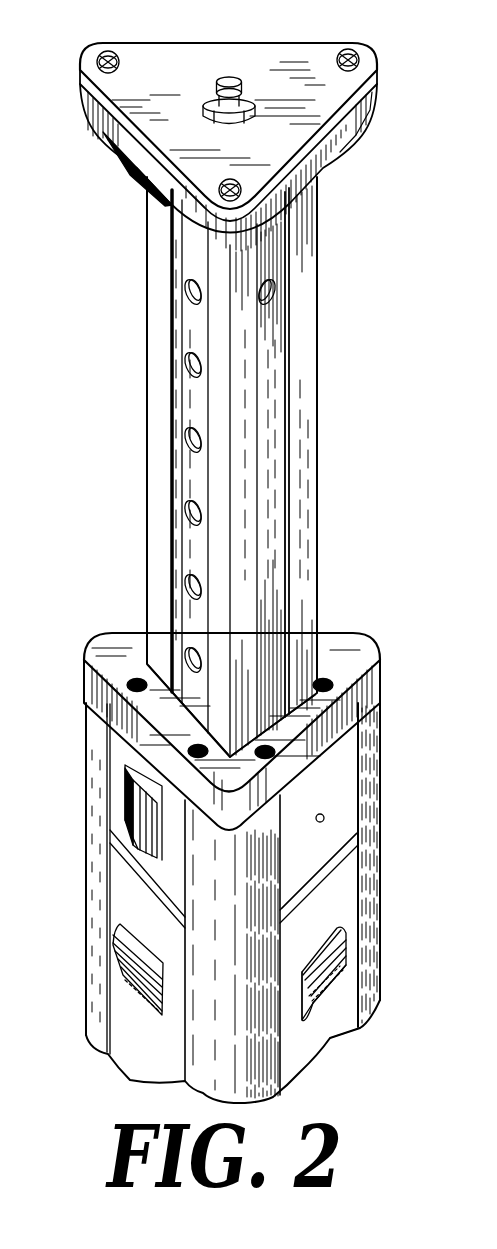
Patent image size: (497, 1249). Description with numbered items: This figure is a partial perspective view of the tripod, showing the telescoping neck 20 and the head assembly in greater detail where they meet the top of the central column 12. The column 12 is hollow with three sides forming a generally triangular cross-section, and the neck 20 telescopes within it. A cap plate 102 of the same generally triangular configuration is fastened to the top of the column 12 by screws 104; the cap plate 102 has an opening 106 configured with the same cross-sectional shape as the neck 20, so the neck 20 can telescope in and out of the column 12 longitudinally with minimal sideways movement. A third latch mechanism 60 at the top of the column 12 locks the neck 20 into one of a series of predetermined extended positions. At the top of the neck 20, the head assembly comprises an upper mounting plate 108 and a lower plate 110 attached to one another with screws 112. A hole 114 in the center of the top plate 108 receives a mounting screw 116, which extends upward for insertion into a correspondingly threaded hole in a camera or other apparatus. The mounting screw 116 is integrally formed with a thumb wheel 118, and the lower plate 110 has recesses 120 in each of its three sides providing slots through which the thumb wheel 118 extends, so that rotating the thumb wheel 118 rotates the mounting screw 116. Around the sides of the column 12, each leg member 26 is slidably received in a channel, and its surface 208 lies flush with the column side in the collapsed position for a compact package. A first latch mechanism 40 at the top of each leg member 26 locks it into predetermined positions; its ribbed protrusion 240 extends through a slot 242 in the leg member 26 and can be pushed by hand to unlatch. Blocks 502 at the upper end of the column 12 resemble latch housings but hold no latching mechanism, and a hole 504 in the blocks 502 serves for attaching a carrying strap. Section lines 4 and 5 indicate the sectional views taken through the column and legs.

The central column 12 is at (370, 870).
The neck 20 is at (305, 394).
The leg member 26 is at (330, 1040).
The first latch mechanism 40 is at (350, 938).
The third latch mechanism 60 is at (122, 820).
The cap plate 102 is at (367, 648).
The screws 104 is at (333, 683).
The opening 106 is at (305, 640).
The upper mounting plate 108 is at (243, 55).
The lower plate 110 is at (367, 110).
The screws 112 is at (104, 54).
The hole 114 is at (210, 99).
The mounting screw 116 is at (224, 77).
The thumb wheel 118 is at (337, 150).
The recesses 120 is at (102, 114).
The surface 208 is at (137, 1020).
The protrusion 240 is at (307, 1015).
The slot 242 is at (340, 990).
The blocks 502 is at (337, 790).
The hole 504 is at (325, 821).
The section line 4 is at (197, 542).
The section line 5 is at (43, 660).